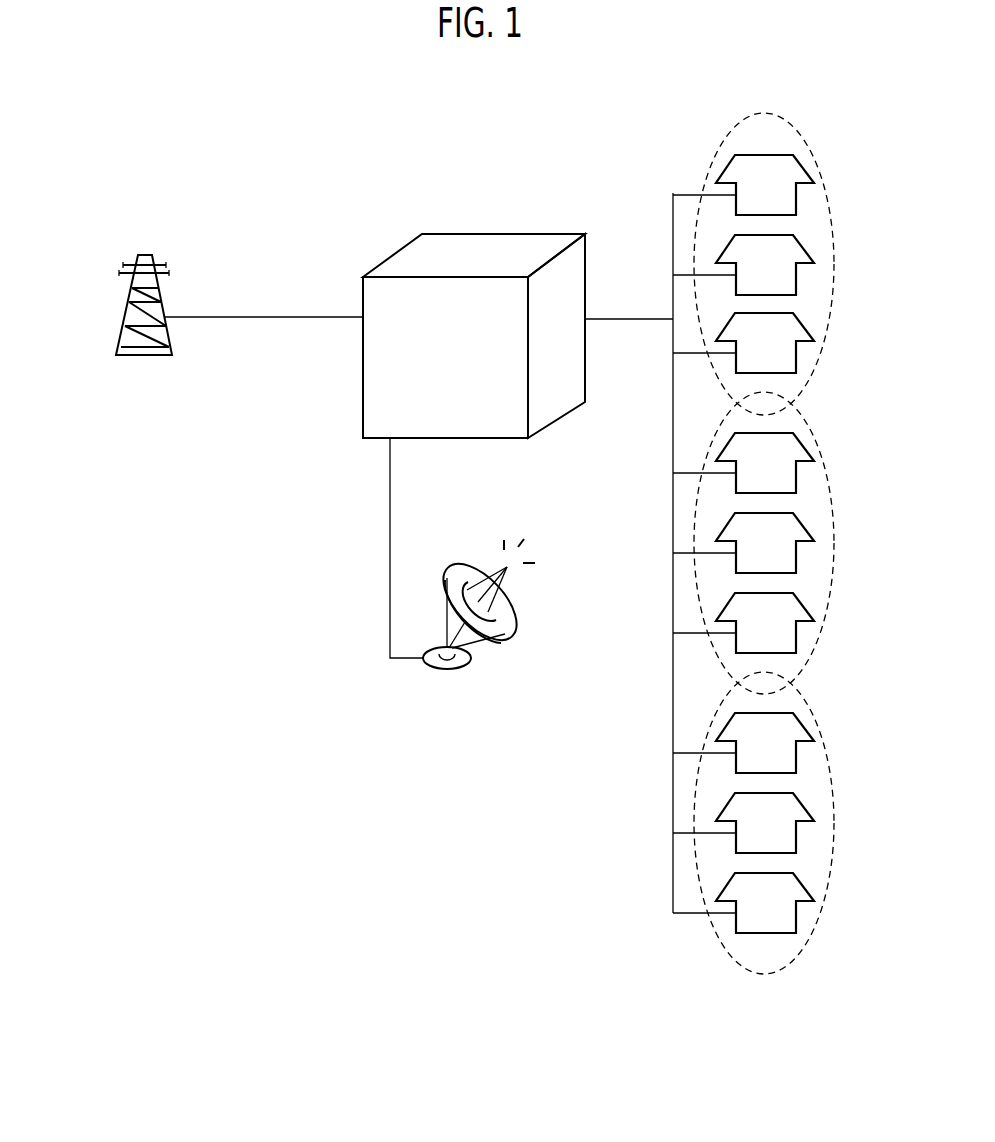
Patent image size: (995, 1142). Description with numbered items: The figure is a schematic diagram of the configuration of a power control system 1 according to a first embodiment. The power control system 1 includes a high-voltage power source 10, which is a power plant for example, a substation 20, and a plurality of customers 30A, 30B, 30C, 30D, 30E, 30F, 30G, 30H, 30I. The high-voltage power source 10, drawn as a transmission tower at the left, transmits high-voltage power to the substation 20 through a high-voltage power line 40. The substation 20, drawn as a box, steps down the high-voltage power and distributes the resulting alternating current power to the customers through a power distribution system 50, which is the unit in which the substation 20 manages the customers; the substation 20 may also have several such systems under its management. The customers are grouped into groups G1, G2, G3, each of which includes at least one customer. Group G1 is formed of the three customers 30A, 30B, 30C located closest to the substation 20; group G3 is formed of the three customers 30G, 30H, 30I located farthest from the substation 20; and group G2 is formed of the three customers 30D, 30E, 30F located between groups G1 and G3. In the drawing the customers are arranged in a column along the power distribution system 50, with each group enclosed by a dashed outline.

The power control system 1 is at (158, 176).
The high-voltage power source 10 is at (125, 306).
The substation 20 is at (474, 233).
The high-voltage power line 40 is at (267, 318).
The power distribution system 50 is at (628, 322).
The customer 30A is at (806, 161).
The customer 30B is at (806, 241).
The customer 30C is at (806, 321).
The customer 30D is at (806, 443).
The customer 30E is at (806, 523).
The customer 30F is at (806, 603).
The customer 30G is at (806, 721).
The customer 30H is at (806, 801).
The customer 30I is at (806, 881).
The group G1 is at (814, 202).
The group G2 is at (814, 484).
The group G3 is at (814, 762).